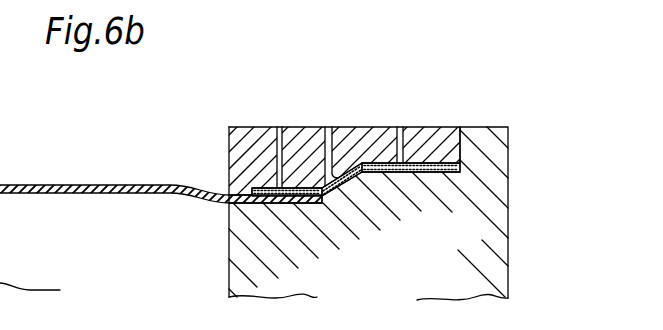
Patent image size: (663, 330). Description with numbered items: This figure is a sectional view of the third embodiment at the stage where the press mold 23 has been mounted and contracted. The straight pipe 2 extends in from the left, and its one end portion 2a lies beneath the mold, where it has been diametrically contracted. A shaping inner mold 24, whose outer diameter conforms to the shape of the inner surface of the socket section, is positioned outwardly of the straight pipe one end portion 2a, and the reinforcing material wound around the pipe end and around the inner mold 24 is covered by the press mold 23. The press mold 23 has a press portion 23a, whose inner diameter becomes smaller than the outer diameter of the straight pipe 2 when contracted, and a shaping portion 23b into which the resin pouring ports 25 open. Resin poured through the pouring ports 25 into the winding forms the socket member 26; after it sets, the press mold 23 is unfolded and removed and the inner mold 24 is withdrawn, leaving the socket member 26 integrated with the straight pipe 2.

The straight pipe 2 is at (75, 185).
The straight pipe one end portion 2a is at (273, 205).
The press mold 23 is at (243, 127).
The press portion 23a is at (252, 188).
The shaping portion 23b is at (375, 170).
The shaping inner mold 24 is at (473, 242).
The resin pouring ports 25 is at (327, 130).
The socket member 26 is at (417, 163).